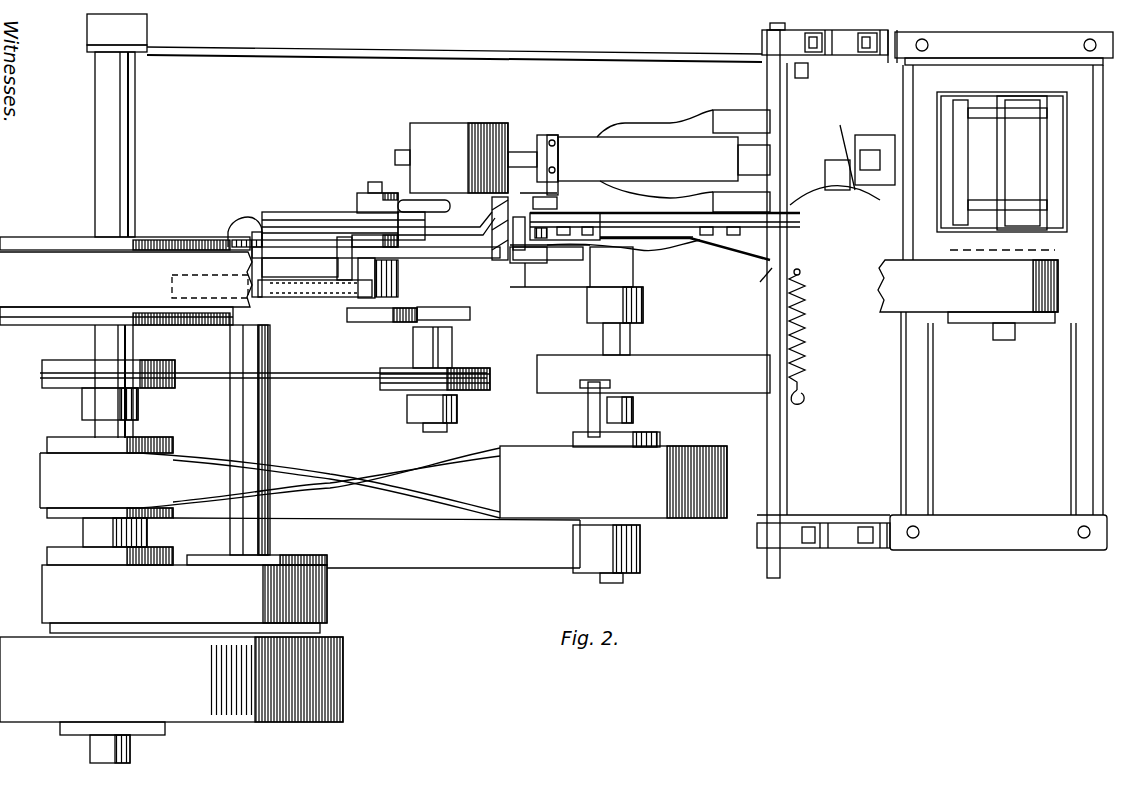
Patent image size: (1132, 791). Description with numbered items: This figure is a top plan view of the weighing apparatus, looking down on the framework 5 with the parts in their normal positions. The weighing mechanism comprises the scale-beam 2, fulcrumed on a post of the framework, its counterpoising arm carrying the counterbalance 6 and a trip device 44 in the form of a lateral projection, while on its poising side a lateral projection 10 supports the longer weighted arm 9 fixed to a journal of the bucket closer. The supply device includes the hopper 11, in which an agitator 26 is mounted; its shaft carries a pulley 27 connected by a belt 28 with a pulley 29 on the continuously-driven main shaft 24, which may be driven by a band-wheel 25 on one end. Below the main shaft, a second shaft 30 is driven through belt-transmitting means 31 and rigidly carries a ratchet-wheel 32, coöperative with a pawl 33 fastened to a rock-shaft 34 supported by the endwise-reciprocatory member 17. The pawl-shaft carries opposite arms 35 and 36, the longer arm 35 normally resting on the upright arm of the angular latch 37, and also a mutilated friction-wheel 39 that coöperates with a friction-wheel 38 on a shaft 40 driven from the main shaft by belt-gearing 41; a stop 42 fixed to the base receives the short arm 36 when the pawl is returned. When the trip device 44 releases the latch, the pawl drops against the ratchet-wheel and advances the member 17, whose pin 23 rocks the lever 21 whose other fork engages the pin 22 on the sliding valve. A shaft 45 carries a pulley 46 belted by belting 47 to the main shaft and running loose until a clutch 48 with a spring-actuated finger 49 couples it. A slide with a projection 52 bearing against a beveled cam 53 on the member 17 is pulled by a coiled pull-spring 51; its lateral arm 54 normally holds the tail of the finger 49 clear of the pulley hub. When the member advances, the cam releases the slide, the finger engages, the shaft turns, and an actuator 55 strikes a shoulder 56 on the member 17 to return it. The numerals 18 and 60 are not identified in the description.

The scale-beam 2 is at (664, 159).
The framework 5 is at (736, 112).
The counterbalance 6 is at (447, 132).
The weighted arm 9 is at (850, 266).
The lateral projection 10 is at (808, 295).
The hopper 11 is at (1025, 88).
The endwise-reciprocatory member 17 is at (412, 268).
The guide rails 18 is at (665, 217).
The lever 21 is at (840, 145).
The pin 22 is at (895, 175).
The pin 23 is at (840, 201).
The main shaft 24 is at (133, 200).
The band-wheel 25 is at (171, 700).
The agitator 26 is at (1002, 162).
The pulley 27 is at (1015, 330).
The belt 28 is at (529, 288).
The pulley 29 is at (125, 234).
The second shaft 30 is at (270, 436).
The belt-transmitting means 31 is at (184, 590).
The ratchet-wheel 32 is at (310, 297).
The pawl 33 is at (325, 297).
The rock-shaft 34 is at (362, 310).
The arm 35 is at (318, 214).
The arm 36 is at (413, 203).
The angular latch 37 is at (245, 217).
The friction-wheel 38 is at (462, 318).
The mutilated friction-wheel 39 is at (362, 322).
The shaft 40 is at (428, 432).
The belt-gearing 41 is at (212, 379).
The stop 42 is at (446, 216).
The trip device 44 is at (560, 182).
The shaft 45 is at (632, 340).
The pulley 46 is at (613, 502).
The belting 47 is at (310, 502).
The clutch 48 is at (636, 418).
The spring-actuated finger 49 is at (585, 405).
The coiled pull-spring 51 is at (806, 327).
The projection 52 is at (749, 283).
The cam 53 is at (750, 248).
The lateral arm 54 is at (653, 374).
The actuator 55 is at (565, 257).
The shoulder 56 is at (623, 255).
The post 60 is at (770, 318).